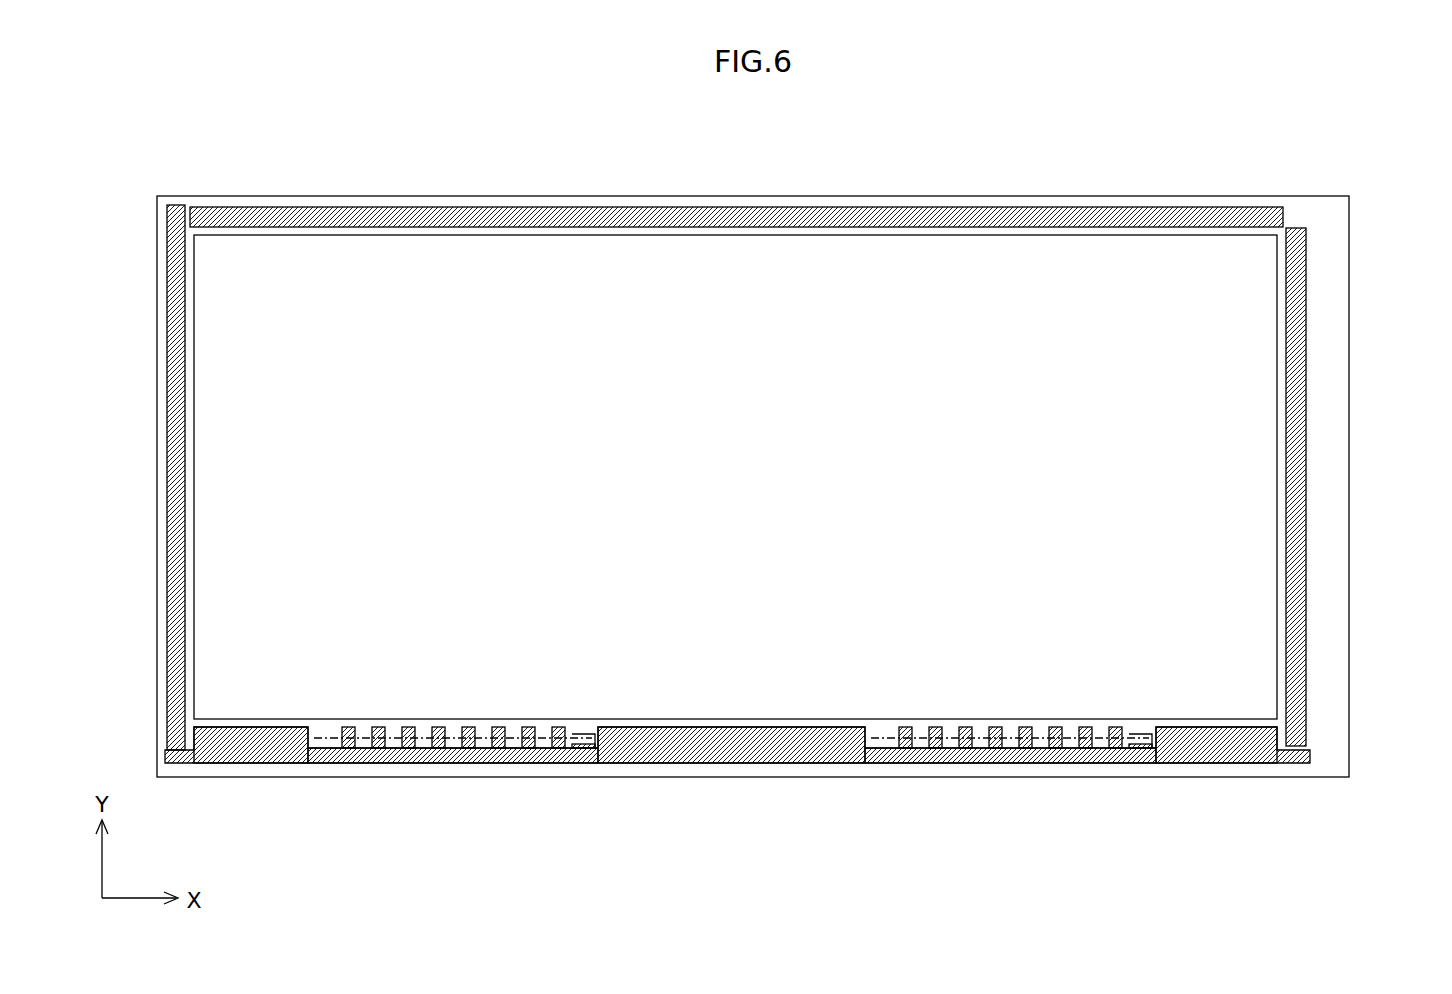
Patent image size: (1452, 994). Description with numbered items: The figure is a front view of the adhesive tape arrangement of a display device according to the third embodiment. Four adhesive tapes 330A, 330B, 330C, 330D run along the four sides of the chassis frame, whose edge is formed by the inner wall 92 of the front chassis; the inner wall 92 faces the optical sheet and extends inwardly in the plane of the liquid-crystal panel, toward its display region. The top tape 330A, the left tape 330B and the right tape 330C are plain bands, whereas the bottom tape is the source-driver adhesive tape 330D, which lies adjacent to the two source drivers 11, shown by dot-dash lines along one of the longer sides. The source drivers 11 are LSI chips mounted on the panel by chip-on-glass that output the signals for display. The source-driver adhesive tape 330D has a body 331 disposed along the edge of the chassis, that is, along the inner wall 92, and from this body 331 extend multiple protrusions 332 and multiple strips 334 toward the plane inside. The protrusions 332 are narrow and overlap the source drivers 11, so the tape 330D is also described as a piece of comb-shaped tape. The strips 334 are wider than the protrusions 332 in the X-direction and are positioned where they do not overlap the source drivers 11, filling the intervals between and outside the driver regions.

The inner wall 92 is at (1330, 762).
The adhesive tape 330A is at (686, 215).
The adhesive tape 330B is at (178, 440).
The adhesive tape 330C is at (1312, 440).
The source-driver adhesive tape 330D is at (782, 752).
The strips 334 is at (257, 742).
The body 331 is at (443, 757).
The protrusions 332 is at (409, 727).
The source drivers 11 is at (584, 734).